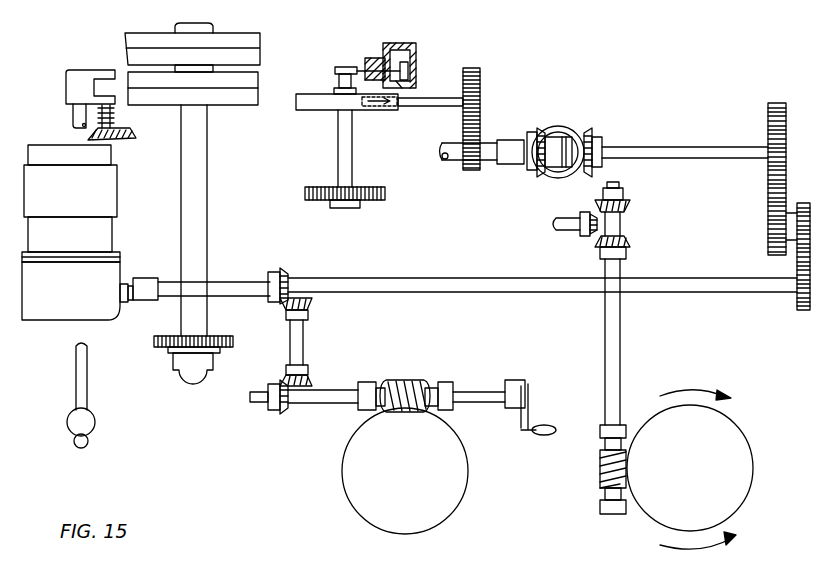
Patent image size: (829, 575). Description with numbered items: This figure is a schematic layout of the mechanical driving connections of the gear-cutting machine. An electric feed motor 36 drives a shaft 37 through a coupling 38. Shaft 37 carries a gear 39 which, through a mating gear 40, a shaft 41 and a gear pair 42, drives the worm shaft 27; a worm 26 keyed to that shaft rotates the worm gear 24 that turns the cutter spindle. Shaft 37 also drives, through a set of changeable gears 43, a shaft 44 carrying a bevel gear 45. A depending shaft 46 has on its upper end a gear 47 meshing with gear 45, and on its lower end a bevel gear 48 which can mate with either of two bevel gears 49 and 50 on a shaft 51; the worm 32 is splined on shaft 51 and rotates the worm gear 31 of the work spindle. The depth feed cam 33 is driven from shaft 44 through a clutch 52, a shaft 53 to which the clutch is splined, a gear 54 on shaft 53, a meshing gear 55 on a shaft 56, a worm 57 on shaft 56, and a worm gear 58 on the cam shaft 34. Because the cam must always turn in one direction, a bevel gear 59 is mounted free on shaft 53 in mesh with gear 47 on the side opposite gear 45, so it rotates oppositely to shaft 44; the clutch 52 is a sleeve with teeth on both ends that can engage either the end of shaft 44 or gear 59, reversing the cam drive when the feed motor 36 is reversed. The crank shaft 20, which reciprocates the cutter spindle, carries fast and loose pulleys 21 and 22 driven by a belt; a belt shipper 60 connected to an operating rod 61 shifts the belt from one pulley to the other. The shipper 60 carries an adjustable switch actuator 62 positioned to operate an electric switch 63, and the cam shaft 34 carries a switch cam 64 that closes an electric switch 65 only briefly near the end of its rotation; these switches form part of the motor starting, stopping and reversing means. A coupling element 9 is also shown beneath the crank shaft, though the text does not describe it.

The cup coupling 9 is at (174, 362).
The crank shaft 20 is at (200, 248).
The fast pulley 21 is at (258, 83).
The loose pulley 22 is at (260, 38).
The worm gear 24 is at (343, 462).
The worm 26 is at (418, 381).
The worm shaft 27 is at (328, 404).
The worm gear 31 is at (648, 520).
The worm 32 is at (600, 479).
The depth feed cam 33 is at (378, 200).
The cam shaft 34 is at (348, 164).
The feed motor 36 is at (45, 322).
The shaft 37 is at (530, 292).
The coupling 38 is at (145, 300).
The gear 39 is at (288, 272).
The mating gear 40 is at (312, 305).
The shaft 41 is at (303, 350).
The gear pair 42 is at (312, 378).
The changeable gears 43 is at (803, 203).
The shaft 44 is at (680, 148).
The bevel gear 45 is at (602, 140).
The depending shaft 46 is at (553, 228).
The gear 47 is at (584, 128).
The bevel gear 48 is at (582, 236).
The bevel gear 49 is at (632, 245).
The bevel gear 50 is at (632, 206).
The shaft 51 is at (620, 331).
The clutch 52 is at (553, 137).
The shaft 53 is at (490, 164).
The gear 54 is at (456, 166).
The gear 55 is at (480, 74).
The shaft 56 is at (428, 100).
The worm 57 is at (372, 110).
The worm gear 58 is at (302, 110).
The bevel gear 59 is at (530, 170).
The belt shipper 60 is at (85, 78).
The operating rod 61 is at (88, 380).
The switch actuator 62 is at (114, 117).
The electric switch 63 is at (128, 140).
The switch cam 64 is at (345, 67).
The electric switch 65 is at (416, 60).